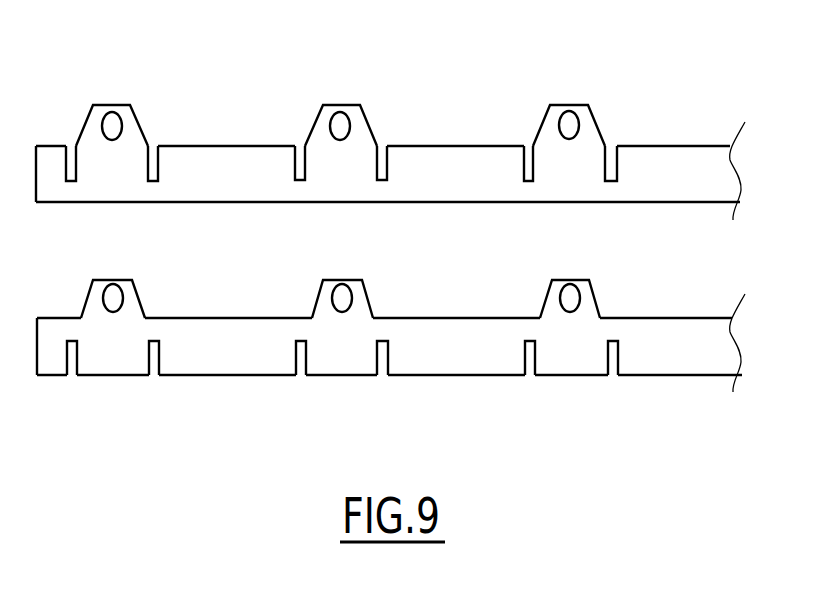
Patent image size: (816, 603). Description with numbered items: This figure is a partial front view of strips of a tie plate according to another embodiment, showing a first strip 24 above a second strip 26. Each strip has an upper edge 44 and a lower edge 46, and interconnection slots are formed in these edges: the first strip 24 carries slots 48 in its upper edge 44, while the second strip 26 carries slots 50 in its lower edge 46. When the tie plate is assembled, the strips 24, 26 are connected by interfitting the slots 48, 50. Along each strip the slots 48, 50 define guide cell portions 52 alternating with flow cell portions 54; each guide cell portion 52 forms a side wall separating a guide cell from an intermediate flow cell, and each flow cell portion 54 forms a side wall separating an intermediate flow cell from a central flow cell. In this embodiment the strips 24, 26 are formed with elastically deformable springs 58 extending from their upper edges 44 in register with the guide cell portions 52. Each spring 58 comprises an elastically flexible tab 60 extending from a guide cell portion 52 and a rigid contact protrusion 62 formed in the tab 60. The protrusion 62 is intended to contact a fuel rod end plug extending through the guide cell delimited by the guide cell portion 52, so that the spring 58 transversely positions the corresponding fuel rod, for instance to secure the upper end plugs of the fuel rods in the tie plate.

The first strip 24 is at (678, 172).
The second strip 26 is at (680, 345).
The upper edge 44 is at (200, 143).
The lower edge 46 is at (488, 203).
The interconnection slot 48 is at (304, 183).
The interconnection slot 50 is at (312, 372).
The guide cell portion 52 is at (95, 157).
The flow cell portion 54 is at (422, 168).
The spring 58 is at (341, 163).
The tab 60 is at (324, 117).
The contact protrusion 62 is at (343, 127).